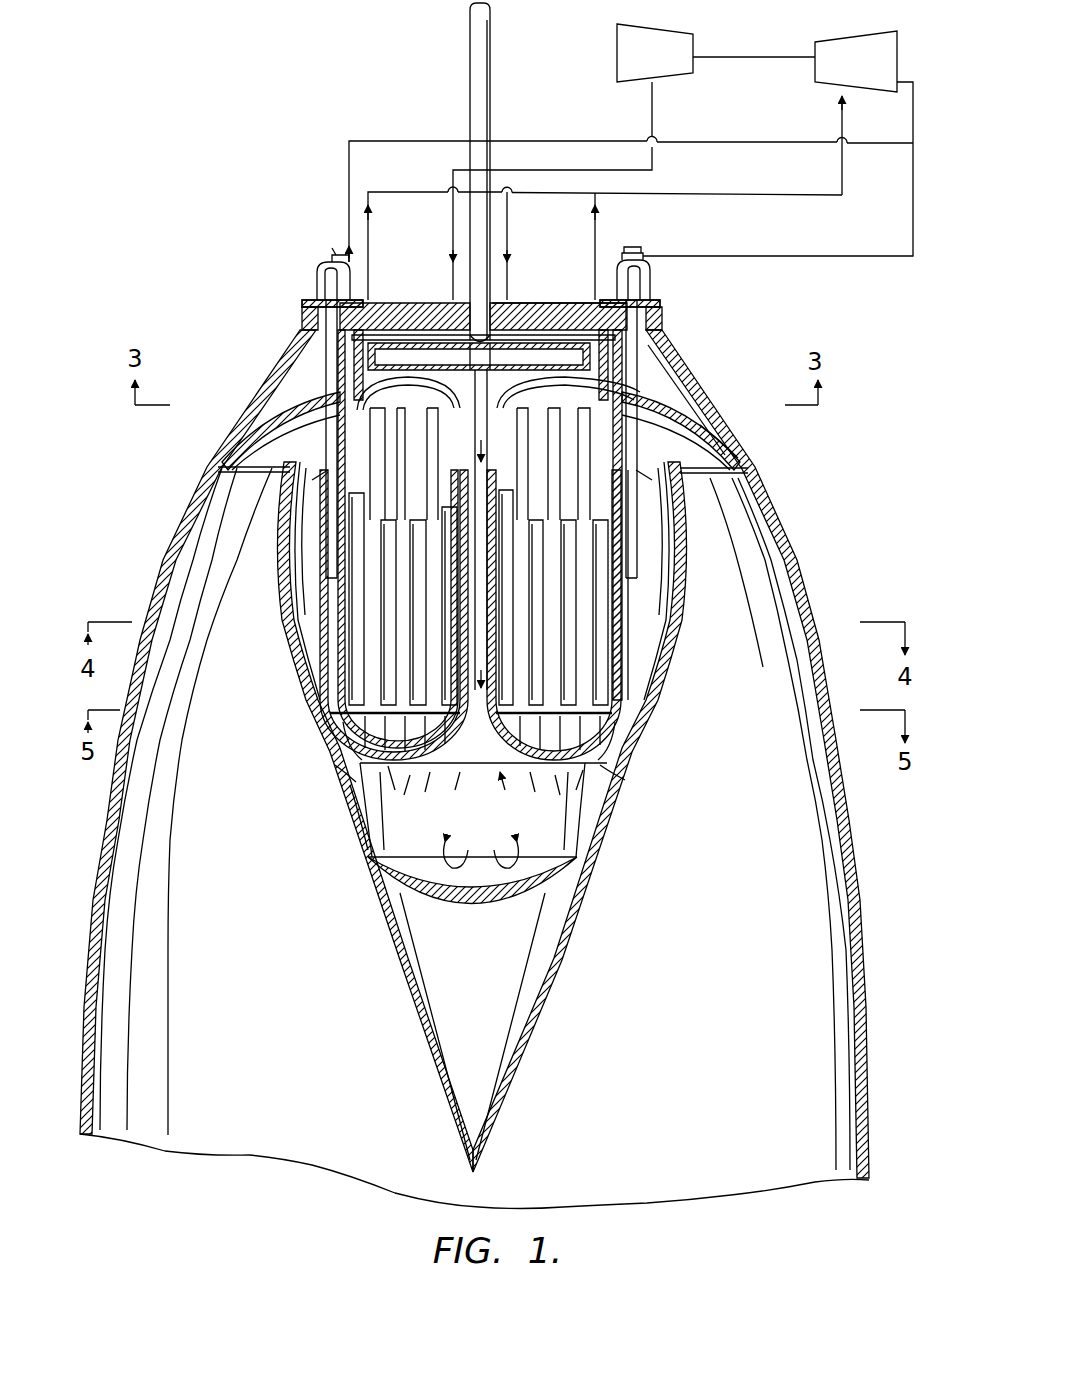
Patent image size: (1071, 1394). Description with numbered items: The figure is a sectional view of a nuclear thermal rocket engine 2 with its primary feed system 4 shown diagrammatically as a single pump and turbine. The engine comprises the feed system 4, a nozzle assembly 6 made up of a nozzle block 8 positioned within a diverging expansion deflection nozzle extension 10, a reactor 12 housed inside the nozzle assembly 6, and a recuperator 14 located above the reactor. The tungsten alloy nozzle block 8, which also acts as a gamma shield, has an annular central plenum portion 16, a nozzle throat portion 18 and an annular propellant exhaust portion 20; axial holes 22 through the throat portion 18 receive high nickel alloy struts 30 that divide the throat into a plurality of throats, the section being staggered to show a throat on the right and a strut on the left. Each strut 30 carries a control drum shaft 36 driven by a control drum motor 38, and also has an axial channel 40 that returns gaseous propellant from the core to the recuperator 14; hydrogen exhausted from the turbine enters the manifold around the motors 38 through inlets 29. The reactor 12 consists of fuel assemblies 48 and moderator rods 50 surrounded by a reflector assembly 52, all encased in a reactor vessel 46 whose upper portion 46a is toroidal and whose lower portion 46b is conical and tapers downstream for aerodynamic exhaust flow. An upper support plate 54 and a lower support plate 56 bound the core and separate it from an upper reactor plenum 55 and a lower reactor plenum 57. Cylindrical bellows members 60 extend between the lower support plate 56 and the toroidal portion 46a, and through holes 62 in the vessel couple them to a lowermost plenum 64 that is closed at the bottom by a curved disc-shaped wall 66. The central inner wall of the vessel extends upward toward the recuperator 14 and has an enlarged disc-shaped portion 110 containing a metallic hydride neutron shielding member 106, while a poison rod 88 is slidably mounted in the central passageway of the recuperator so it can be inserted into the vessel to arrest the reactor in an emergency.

The nuclear thermal rocket engine 2 is at (236, 158).
The primary feed system 4 is at (578, 74).
The nozzle assembly 6 is at (722, 428).
The nozzle block 8 is at (688, 398).
The nozzle extension 10 is at (806, 614).
The reactor 12 is at (282, 670).
The recuperator 14 is at (519, 300).
The central plenum portion 16 is at (396, 365).
The nozzle throat portion 18 is at (657, 384).
The propellant exhaust portion 20 is at (742, 458).
The axial holes 22 is at (292, 392).
The inlets 29 is at (340, 258).
The struts 30 is at (318, 366).
The control drum shaft 36 is at (300, 309).
The control drum motor 38 is at (325, 274).
The axial channel 40 is at (661, 306).
The reactor vessel 46 is at (620, 818).
The upper portion of reactor vessel 46a is at (684, 618).
The lower portion of reactor vessel 46b is at (572, 897).
The fuel assemblies 48 is at (363, 698).
The moderator rods 50 is at (345, 722).
The reflector assembly 52 is at (310, 526).
The upper support plate 54 is at (318, 500).
The upper reactor plenum 55 is at (668, 495).
The lower support plate 56 is at (622, 736).
The lower reactor plenum 57 is at (607, 768).
The cylindrical members 60 is at (338, 770).
The through holes 62 is at (358, 796).
The lowermost plenum 64 is at (465, 819).
The curved disc-shaped wall 66 is at (420, 886).
The poison rod 88 is at (469, 72).
The neutron shielding member 106 is at (495, 356).
The enlarged disc-shaped portion 110 is at (396, 300).